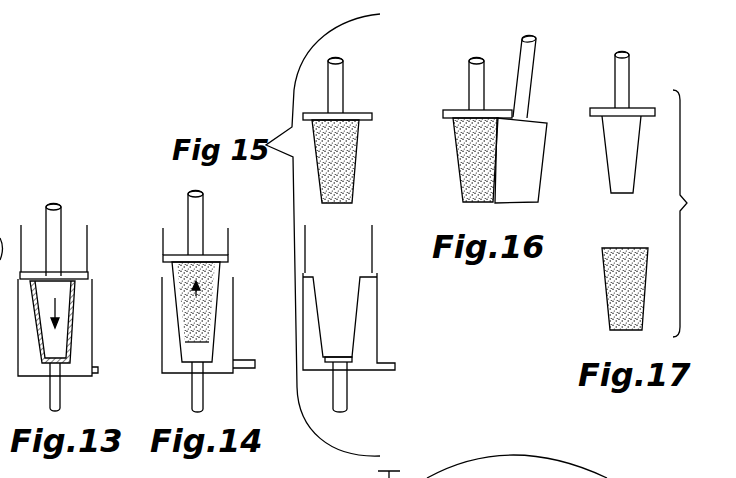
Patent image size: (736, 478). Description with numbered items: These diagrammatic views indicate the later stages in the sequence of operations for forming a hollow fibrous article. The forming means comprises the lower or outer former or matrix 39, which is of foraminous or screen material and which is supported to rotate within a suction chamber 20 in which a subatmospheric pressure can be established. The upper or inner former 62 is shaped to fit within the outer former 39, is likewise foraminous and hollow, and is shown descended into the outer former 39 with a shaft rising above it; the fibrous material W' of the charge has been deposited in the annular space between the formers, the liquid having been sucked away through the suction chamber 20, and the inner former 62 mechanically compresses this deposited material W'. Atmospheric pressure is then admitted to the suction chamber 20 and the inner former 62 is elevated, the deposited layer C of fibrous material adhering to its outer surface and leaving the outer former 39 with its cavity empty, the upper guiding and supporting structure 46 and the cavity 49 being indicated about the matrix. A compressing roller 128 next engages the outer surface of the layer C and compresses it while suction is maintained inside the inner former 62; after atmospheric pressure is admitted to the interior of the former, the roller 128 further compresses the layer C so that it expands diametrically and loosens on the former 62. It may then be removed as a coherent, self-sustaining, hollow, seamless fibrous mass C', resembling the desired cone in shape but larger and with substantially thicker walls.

In FIG. 13, the plunger holder 46 is at (72, 252).
In FIG. 15, the plunger holder 46 is at (353, 253).
In FIG. 13, the inner former 62 is at (88, 280).
In FIG. 17, the inner former 62 is at (630, 155).
In FIG. 13, the suction chamber 20 is at (83, 349).
In FIG. 14, the suction chamber 20 is at (227, 343).
In FIG. 15, the suction chamber 20 is at (368, 345).
In FIG. 13, the outer former or matrix 39 is at (75, 337).
In FIG. 14, the outer former or matrix 39 is at (215, 333).
In FIG. 15, the outer former or matrix 39 is at (357, 332).
In FIG. 15, the mold cavity 49 is at (342, 307).
In FIG. 16, the compressing roller 128 is at (533, 183).
In FIG. 14, the deposited layer of fibrous material C is at (221, 292).
In FIG. 15, the deposited layer of fibrous material C is at (350, 161).
In FIG. 17, the hollow seamless fibrous mass C' is at (605, 289).
In FIG. 13, the fibrous material of the charge W' is at (94, 305).